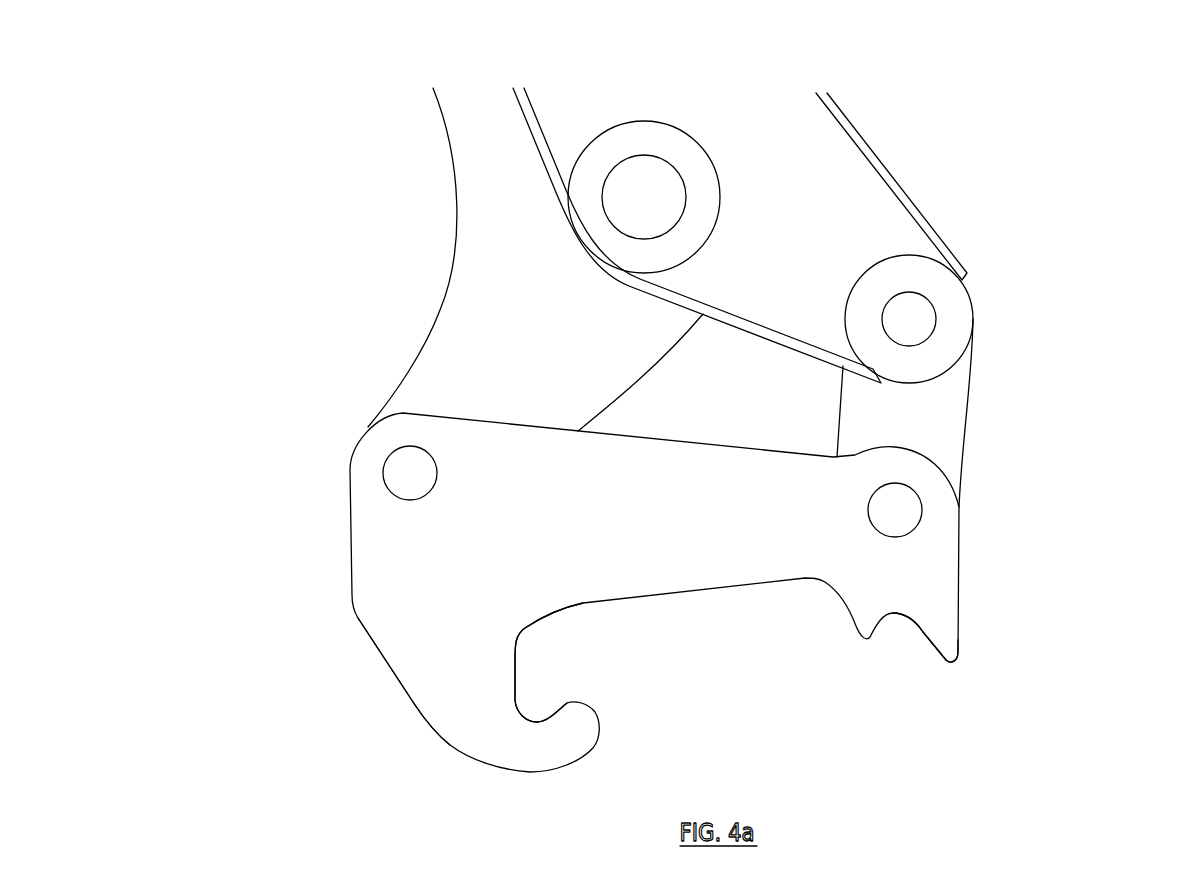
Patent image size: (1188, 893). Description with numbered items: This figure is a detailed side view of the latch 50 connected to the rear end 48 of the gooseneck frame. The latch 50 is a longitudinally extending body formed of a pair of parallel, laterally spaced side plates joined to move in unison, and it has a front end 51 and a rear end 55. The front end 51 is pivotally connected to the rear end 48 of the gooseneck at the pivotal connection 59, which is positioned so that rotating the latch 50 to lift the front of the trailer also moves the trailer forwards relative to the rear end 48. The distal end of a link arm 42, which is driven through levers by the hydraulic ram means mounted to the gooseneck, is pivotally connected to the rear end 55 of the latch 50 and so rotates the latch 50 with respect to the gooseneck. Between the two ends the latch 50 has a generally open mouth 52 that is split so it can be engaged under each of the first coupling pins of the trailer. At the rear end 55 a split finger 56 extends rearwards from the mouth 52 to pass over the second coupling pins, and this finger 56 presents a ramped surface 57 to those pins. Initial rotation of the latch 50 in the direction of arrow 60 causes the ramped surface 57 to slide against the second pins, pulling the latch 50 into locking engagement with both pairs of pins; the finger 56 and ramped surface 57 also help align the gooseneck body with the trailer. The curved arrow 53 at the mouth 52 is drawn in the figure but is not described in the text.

The link arm 42 is at (938, 407).
The rear end of gooseneck frame 48 is at (402, 363).
The latch 50 is at (293, 689).
The front end of latch 51 is at (418, 705).
The open mouth 52 is at (607, 667).
The direction of pin engagement 53 is at (545, 683).
The rear end of latch 55 is at (972, 550).
The split finger 56 is at (962, 672).
The ramped surface 57 is at (933, 648).
The pivotal connection 59 is at (410, 473).
The arrow indicating direction of latch rotation 60 is at (1135, 630).